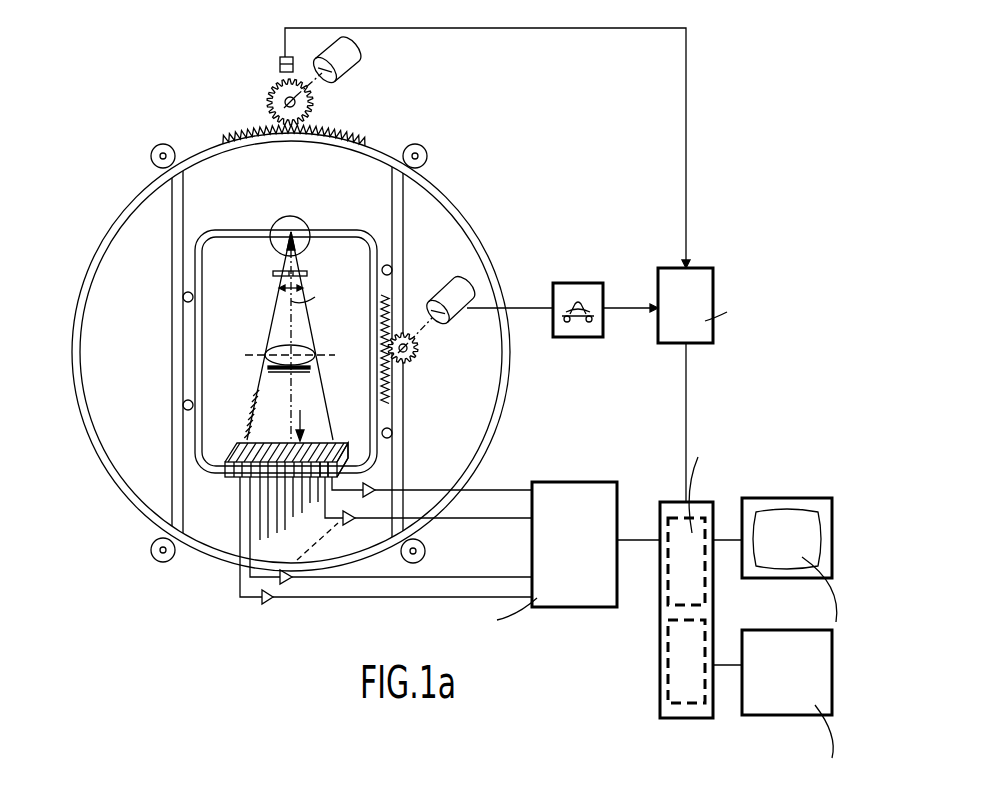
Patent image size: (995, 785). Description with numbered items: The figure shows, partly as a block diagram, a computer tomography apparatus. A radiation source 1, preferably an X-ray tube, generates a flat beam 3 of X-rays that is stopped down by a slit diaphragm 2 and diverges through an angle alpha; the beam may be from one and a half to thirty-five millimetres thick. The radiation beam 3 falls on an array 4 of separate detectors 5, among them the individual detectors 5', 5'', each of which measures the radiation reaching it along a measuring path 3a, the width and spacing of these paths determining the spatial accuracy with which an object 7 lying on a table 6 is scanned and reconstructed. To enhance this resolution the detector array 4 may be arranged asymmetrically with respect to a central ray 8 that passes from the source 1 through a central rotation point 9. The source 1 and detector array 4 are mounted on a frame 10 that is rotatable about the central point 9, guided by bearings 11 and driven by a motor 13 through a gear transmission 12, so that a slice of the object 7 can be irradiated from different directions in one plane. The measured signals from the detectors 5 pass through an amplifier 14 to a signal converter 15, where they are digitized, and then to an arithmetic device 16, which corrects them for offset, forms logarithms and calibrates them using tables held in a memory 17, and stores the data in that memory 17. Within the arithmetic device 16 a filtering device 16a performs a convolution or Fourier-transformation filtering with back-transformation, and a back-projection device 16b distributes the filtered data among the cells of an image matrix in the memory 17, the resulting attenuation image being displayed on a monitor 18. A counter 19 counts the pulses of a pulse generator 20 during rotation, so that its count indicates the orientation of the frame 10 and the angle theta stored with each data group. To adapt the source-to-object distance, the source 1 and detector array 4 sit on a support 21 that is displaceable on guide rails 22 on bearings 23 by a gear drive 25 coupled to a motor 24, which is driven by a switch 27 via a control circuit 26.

The radiation source 1 is at (290, 216).
The slit diaphragm 2 is at (275, 273).
The radiation beam 3 is at (300, 323).
The measuring path 3a is at (251, 420).
The detector array 4 is at (320, 425).
The detectors 5 is at (286, 440).
The detector 5' is at (333, 426).
The detector 5'' is at (352, 438).
The table 6 is at (272, 373).
The object 7 is at (282, 346).
The central ray 8 is at (291, 385).
The central point 9 is at (288, 358).
The frame 10 is at (127, 203).
The bearings 11 is at (157, 147).
The gear transmission 12 is at (313, 103).
The motor 13 is at (352, 64).
The amplifier 14 is at (370, 498).
The signal converter 15 is at (585, 607).
The arithmetic device 16 is at (672, 502).
The filtering device 16a is at (672, 588).
The back-projection device 16b is at (677, 682).
The memory 17 is at (786, 715).
The display device (monitor) 18 is at (786, 578).
The counter 19 is at (672, 315).
The pulse generator 20 is at (280, 63).
The support 21 is at (237, 231).
The guide rails 22 is at (178, 263).
The bearings 23 is at (388, 264).
The motor 24 is at (457, 288).
The gear drive 25 is at (420, 350).
The control circuit 26 is at (580, 283).
The switch 27 is at (563, 298).